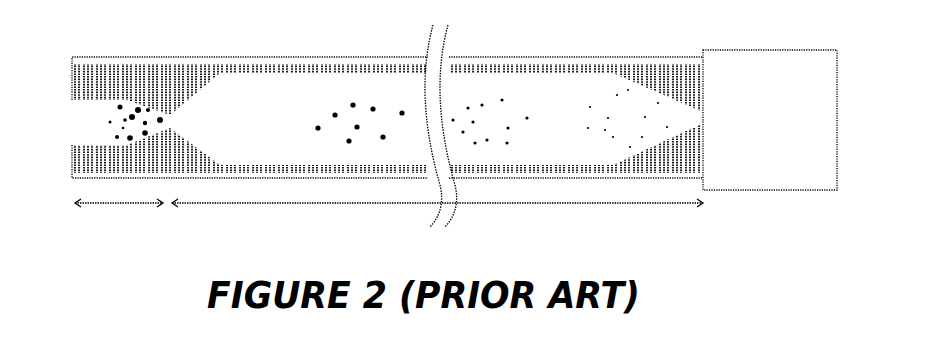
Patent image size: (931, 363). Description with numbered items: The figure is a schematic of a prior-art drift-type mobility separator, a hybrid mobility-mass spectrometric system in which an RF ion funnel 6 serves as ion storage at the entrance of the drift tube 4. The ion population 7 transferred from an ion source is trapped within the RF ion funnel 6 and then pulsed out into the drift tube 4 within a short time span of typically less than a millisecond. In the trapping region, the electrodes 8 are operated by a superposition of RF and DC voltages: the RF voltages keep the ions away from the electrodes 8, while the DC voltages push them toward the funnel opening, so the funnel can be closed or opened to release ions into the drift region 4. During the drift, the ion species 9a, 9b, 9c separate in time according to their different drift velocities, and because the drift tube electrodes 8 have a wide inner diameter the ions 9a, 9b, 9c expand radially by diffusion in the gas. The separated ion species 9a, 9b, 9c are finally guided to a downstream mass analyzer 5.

The drift tube 4 is at (437, 211).
The mass analyzer 5 is at (770, 120).
The RF ion funnel 6 is at (119, 210).
The ion population 7 is at (132, 122).
The electrodes 8 is at (380, 120).
The ion species 9a is at (359, 122).
The ion species 9b is at (489, 121).
The ion species 9c is at (627, 118).